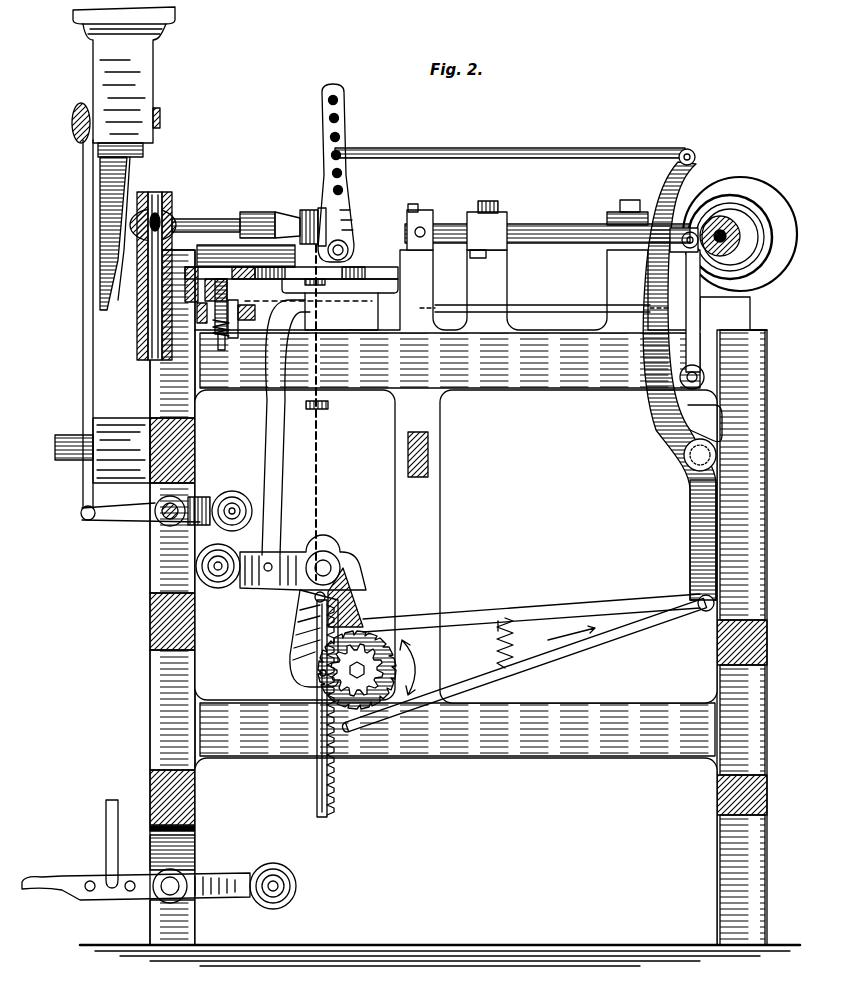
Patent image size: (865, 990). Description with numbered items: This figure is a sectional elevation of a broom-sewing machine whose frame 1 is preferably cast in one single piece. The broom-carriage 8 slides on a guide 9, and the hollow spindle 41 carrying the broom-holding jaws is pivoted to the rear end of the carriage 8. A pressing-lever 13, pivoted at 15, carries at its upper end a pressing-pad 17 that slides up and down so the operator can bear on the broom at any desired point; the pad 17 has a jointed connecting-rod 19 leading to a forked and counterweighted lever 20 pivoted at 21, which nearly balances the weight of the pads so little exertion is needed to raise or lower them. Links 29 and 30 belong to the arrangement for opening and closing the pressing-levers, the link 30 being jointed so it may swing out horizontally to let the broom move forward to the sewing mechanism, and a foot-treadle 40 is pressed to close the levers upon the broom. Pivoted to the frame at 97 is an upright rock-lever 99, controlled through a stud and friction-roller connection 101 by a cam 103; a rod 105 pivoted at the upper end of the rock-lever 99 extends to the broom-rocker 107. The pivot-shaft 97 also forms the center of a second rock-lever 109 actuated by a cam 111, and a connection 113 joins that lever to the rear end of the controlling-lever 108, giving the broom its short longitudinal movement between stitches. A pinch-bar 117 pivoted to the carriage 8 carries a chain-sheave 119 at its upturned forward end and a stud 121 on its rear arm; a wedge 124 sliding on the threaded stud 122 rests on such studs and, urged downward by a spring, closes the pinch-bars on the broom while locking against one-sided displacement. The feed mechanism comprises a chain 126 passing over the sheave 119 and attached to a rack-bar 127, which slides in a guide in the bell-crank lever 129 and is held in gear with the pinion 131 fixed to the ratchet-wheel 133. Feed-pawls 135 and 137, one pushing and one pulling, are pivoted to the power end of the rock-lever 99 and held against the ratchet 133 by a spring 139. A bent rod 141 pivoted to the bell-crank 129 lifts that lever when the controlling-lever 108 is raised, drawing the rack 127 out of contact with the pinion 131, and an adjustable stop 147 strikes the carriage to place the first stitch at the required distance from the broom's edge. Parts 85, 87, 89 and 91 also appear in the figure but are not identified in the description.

The frame 1 is at (568, 378).
The broom-carriage 8 is at (356, 272).
The guide 9 is at (381, 275).
The pressing-lever 13 is at (118, 327).
The pivot 15 is at (68, 462).
The pressing-pad 17 is at (140, 98).
The jointed connecting-rod 19 is at (83, 383).
The forked and counterweighted lever 20 is at (204, 496).
The pivot 21 is at (158, 520).
The link 29 is at (72, 120).
The link 30 is at (171, 118).
The foot-treadle 40 is at (65, 875).
The hollow spindle 41 is at (157, 358).
The bar 85 is at (553, 226).
The cam wheel 87 is at (732, 208).
The link 89 is at (700, 360).
The pivot block 91 is at (670, 245).
The pivot-shaft 97 is at (684, 458).
The upright rock-lever 99 is at (690, 518).
The stud and friction-roller connection 101 is at (664, 208).
The cam 103 is at (787, 228).
The rod 105 is at (549, 154).
The broom-rocker 107 is at (350, 210).
The controlling-lever 108 is at (236, 330).
The rock-lever 109 is at (705, 418).
The cam 111 is at (706, 172).
The connection 113 is at (545, 297).
The pinch-bar 117 is at (275, 230).
The chain-sheave 119 is at (313, 210).
The stud 121 is at (203, 325).
The stud 122 is at (225, 350).
The sliding triangular piece or wedge 124 is at (248, 322).
The chain or flexible cord 126 is at (320, 332).
The rack-bar 127 is at (335, 770).
The bell-crank lever 129 is at (250, 584).
The pinion 131 is at (357, 670).
The ratchet-wheel 133 is at (420, 667).
The feed-pawl 135 is at (364, 610).
The feed-pawl 137 is at (378, 722).
The spring 139 is at (500, 640).
The bent rod 141 is at (272, 432).
The adjustable stop 147 is at (335, 408).